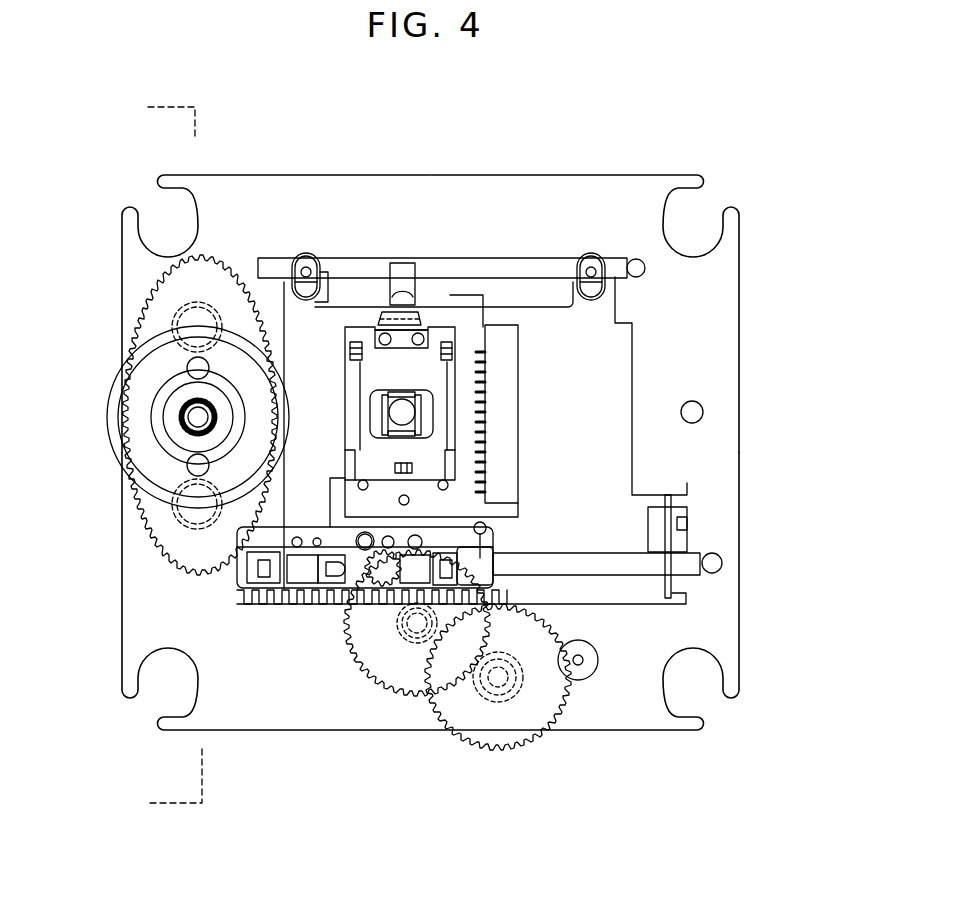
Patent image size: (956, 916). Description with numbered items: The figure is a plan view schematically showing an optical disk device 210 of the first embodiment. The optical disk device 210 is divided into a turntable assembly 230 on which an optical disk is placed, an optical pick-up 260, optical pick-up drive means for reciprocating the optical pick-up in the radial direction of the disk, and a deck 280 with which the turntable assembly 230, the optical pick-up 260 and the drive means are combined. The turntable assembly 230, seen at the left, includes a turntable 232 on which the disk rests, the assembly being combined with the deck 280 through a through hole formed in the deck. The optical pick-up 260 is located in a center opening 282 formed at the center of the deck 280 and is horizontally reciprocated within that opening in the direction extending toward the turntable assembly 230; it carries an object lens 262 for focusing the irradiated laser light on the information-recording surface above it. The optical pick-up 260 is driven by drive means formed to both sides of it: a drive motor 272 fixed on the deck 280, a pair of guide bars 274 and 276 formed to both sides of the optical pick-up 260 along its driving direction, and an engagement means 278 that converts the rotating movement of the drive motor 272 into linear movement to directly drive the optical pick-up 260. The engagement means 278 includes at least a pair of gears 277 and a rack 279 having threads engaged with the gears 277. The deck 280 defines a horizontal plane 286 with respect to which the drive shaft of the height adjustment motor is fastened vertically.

The optical disk device 210 is at (424, 490).
The turntable assembly 230 is at (128, 372).
The turntable 232 is at (160, 427).
The optical pick-up 260 is at (450, 330).
The object lens 262 is at (402, 405).
The drive motor 272 is at (583, 679).
The guide bar 274 is at (697, 575).
The guide bar 276 is at (645, 266).
The gears 277 is at (460, 730).
The engagement means 278 is at (292, 798).
The rack 279 is at (253, 606).
The deck 280 is at (500, 175).
The center opening 282 is at (600, 380).
The horizontal plane 286 is at (562, 188).